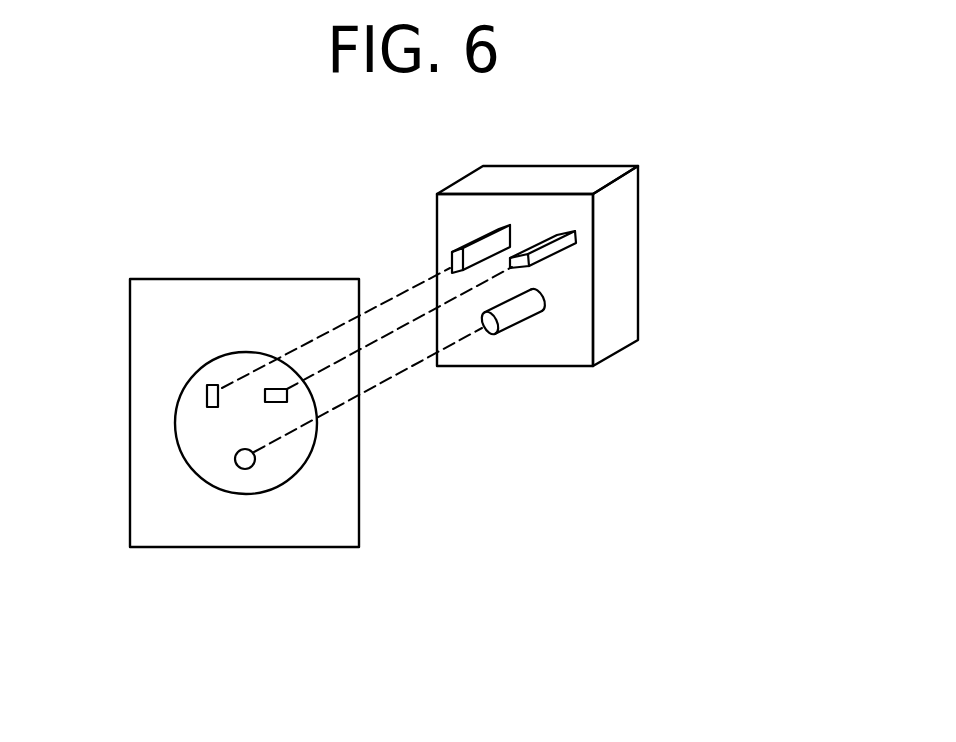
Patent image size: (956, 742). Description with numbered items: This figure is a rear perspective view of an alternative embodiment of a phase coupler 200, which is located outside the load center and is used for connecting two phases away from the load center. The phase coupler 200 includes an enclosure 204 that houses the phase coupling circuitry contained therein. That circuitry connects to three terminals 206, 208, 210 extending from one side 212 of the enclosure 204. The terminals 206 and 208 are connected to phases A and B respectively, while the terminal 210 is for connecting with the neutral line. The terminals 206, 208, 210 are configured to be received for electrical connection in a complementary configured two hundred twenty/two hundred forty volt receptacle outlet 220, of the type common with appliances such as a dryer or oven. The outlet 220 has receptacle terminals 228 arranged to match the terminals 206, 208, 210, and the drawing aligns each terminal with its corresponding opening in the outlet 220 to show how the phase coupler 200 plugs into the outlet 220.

The phase coupler 200 is at (698, 323).
The enclosure 204 is at (638, 228).
The terminal 206 is at (478, 236).
The terminal 208 is at (552, 236).
The terminal 210 is at (523, 307).
The side of enclosure 212 is at (483, 352).
The receptacle outlet 220 is at (249, 352).
The receptacle terminals 228 is at (277, 403).